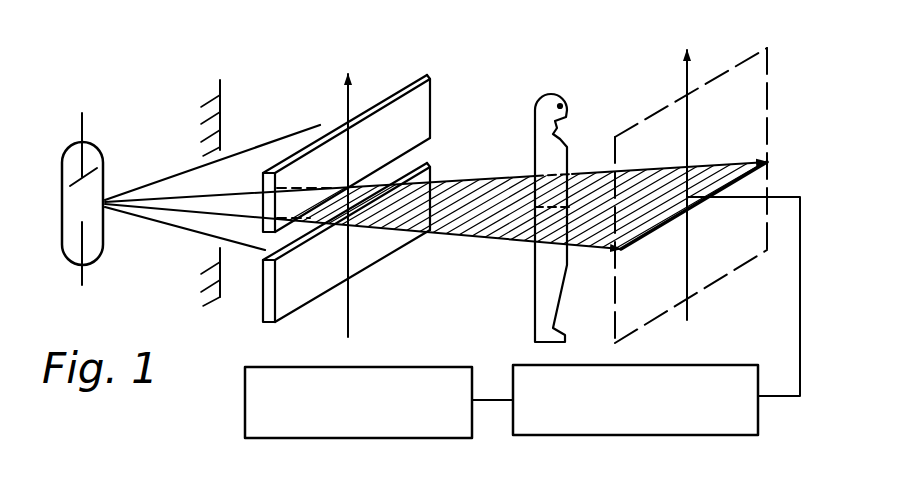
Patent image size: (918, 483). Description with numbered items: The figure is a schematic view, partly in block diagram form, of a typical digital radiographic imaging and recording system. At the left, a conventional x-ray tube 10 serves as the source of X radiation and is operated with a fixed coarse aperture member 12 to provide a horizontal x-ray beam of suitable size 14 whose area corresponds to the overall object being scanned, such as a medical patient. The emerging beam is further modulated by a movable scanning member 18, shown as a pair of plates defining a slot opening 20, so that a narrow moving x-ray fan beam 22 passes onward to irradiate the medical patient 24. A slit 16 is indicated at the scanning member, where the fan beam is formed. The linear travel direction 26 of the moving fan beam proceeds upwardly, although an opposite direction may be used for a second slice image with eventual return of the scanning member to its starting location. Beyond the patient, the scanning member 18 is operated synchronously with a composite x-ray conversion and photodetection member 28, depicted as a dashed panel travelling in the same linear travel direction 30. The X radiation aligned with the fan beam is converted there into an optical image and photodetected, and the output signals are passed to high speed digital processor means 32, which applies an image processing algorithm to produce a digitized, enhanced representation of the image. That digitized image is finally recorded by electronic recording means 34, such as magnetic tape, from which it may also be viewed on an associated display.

The x-ray tube 10 is at (98, 141).
The fixed coarse aperture member 12 is at (222, 93).
The horizontal x-ray beam 14 is at (188, 212).
The slit 16 is at (268, 140).
The movable scanning member 18 is at (432, 99).
The slot opening 20 is at (424, 157).
The moving x-ray fan beam 22 is at (480, 194).
The medical patient 24 is at (567, 147).
The linear travel direction 26 is at (350, 74).
The composite x-ray conversion and photodetection member 28 is at (700, 197).
The linear travel direction 30 is at (690, 48).
The digital processor means 32 is at (552, 435).
The electronic recording means 34 is at (246, 438).